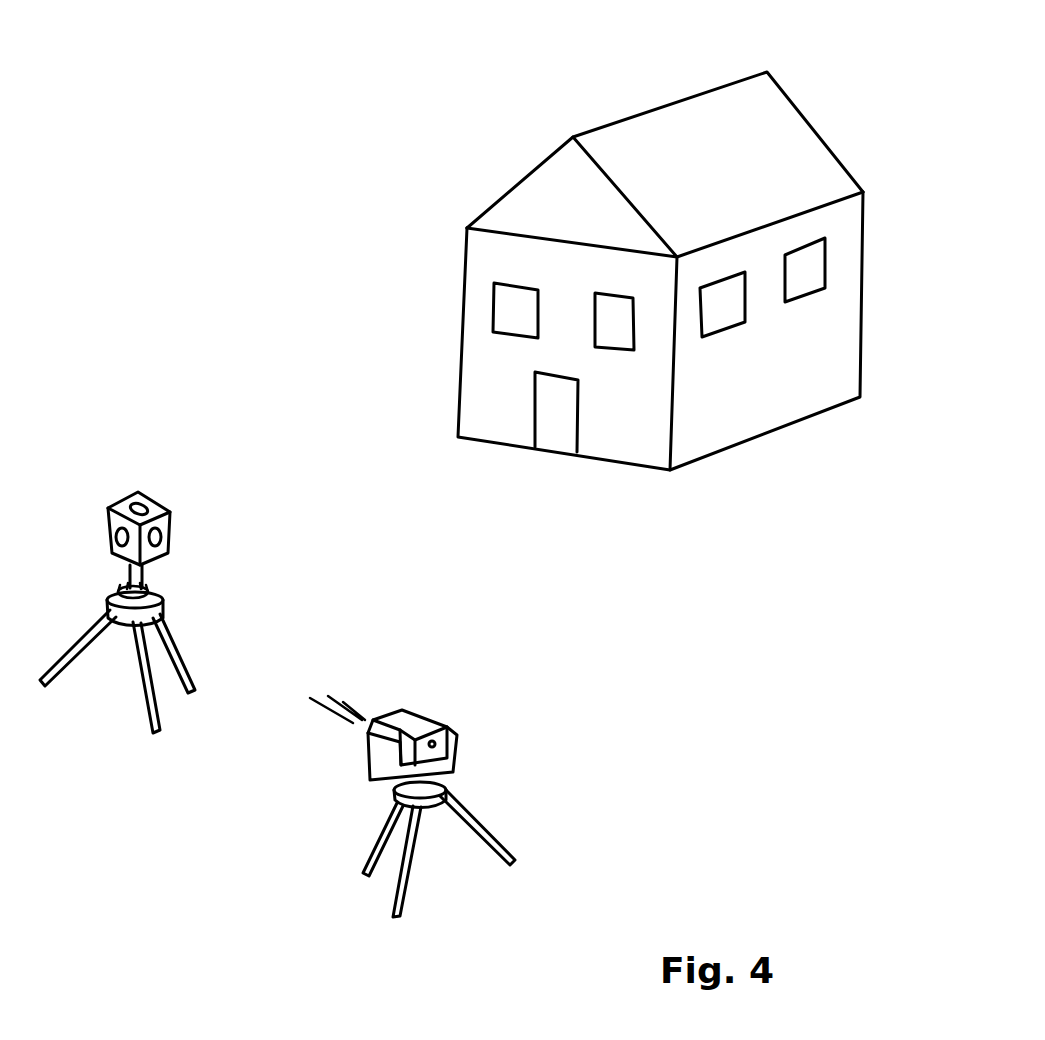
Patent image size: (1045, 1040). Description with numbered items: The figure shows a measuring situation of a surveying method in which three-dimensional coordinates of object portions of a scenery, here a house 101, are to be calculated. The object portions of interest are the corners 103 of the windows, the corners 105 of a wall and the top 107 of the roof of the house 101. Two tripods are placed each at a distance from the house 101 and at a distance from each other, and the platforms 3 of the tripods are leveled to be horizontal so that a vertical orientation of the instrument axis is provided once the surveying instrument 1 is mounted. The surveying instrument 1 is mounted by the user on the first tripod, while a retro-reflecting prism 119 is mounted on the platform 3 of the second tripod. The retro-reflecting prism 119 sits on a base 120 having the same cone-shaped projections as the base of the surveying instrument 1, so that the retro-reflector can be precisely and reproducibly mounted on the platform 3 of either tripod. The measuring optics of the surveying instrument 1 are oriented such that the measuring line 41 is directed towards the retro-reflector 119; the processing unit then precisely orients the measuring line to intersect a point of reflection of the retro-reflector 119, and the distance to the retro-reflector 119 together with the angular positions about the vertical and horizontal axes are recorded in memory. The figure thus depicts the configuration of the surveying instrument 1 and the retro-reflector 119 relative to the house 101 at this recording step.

The house 101 is at (679, 250).
The corners of windows 103 is at (640, 300).
The corners of a wall 105 is at (464, 226).
The top of a roof 107 is at (573, 133).
The retro-reflecting prism 119 is at (137, 490).
The base 120 is at (143, 592).
The platform 3 is at (162, 608).
The surveying instrument 1 is at (453, 730).
The laser beam 41 is at (353, 700).